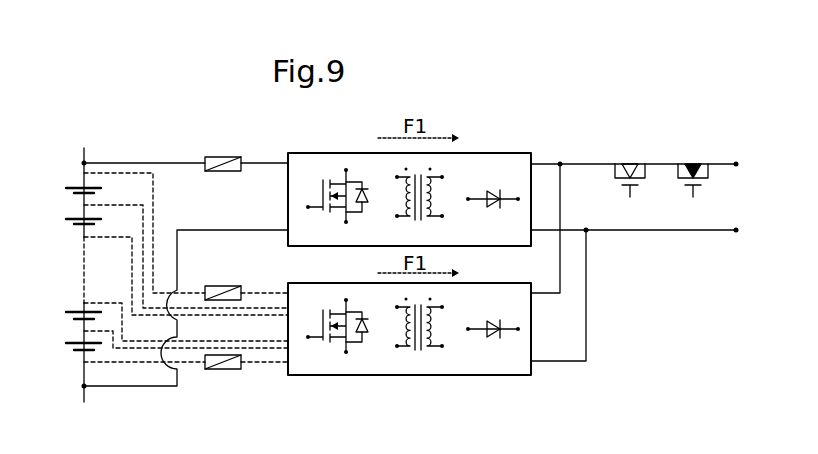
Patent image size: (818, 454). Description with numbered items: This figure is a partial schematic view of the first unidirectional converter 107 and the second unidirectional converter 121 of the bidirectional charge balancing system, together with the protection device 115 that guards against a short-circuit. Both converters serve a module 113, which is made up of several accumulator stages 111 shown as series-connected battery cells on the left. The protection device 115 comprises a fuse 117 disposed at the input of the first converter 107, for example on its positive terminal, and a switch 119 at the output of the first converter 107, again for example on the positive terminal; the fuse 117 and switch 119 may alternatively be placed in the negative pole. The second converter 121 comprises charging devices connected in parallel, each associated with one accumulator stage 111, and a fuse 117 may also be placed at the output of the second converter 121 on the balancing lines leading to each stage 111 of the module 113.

The first unidirectional converter 107 is at (490, 152).
The accumulator stage 111 is at (58, 333).
The module 113 is at (72, 268).
The protection device 115 is at (707, 124).
The fuse 117 is at (222, 157).
The switch 119 is at (646, 152).
The second unidirectional converter 121 is at (462, 377).